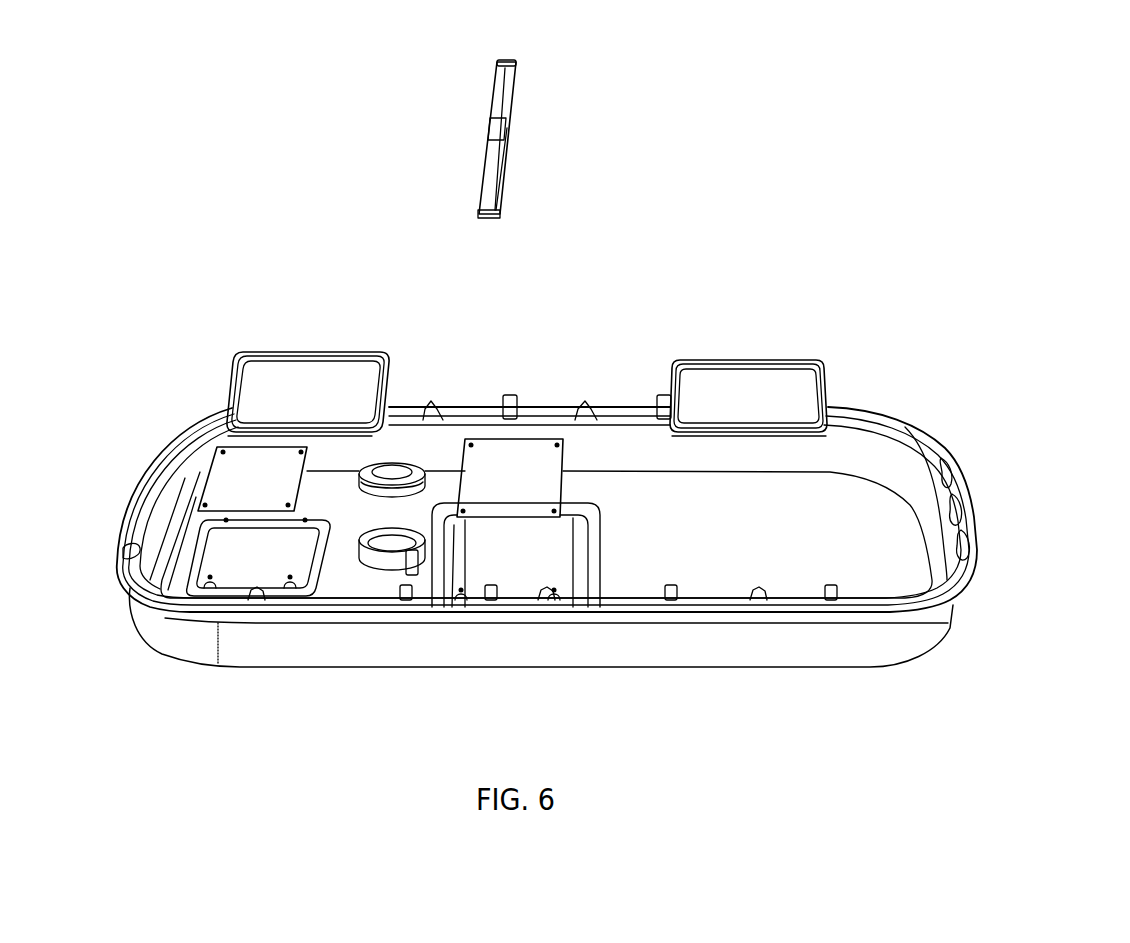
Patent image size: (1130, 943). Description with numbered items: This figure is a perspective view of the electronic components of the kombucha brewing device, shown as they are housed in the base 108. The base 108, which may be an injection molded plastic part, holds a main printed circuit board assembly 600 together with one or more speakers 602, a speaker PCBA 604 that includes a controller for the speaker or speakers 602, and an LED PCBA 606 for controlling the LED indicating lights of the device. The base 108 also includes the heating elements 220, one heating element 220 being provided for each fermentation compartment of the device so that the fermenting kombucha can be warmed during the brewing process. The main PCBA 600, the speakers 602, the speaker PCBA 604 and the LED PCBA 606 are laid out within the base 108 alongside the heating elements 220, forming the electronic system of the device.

The base 108 is at (950, 396).
The heating element 220 is at (384, 372).
The main printed circuit board assembly 600 is at (533, 439).
The speaker 602 is at (393, 466).
The speaker PCBA 604 is at (208, 478).
The LED PCBA 606 is at (492, 94).